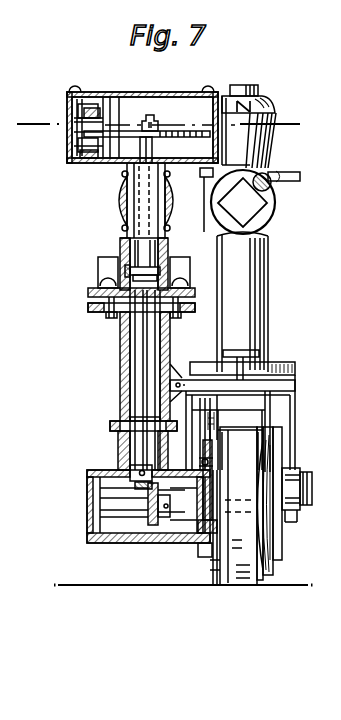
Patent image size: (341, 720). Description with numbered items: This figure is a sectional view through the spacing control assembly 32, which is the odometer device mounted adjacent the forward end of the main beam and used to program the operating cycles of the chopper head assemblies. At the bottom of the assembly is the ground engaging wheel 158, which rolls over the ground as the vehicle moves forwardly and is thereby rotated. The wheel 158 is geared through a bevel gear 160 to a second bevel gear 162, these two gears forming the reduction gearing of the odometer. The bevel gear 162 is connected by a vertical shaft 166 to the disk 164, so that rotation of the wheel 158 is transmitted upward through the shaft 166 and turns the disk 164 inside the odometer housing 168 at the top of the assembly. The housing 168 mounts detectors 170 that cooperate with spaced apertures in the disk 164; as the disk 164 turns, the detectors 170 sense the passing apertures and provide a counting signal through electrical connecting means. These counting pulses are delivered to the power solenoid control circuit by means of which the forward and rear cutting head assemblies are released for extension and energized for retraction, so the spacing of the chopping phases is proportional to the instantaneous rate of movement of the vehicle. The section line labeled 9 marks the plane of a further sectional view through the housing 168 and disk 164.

The section line 9- 9 is at (36, 118).
The spacing control assembly 32 is at (77, 74).
The detectors 170 is at (94, 104).
The odometer housing 168 is at (86, 166).
The disk 164 is at (112, 131).
The shaft 166 is at (140, 345).
The bevel gear 162 is at (108, 478).
The bevel gear 160 is at (150, 527).
The ground engaging wheel 158 is at (238, 583).